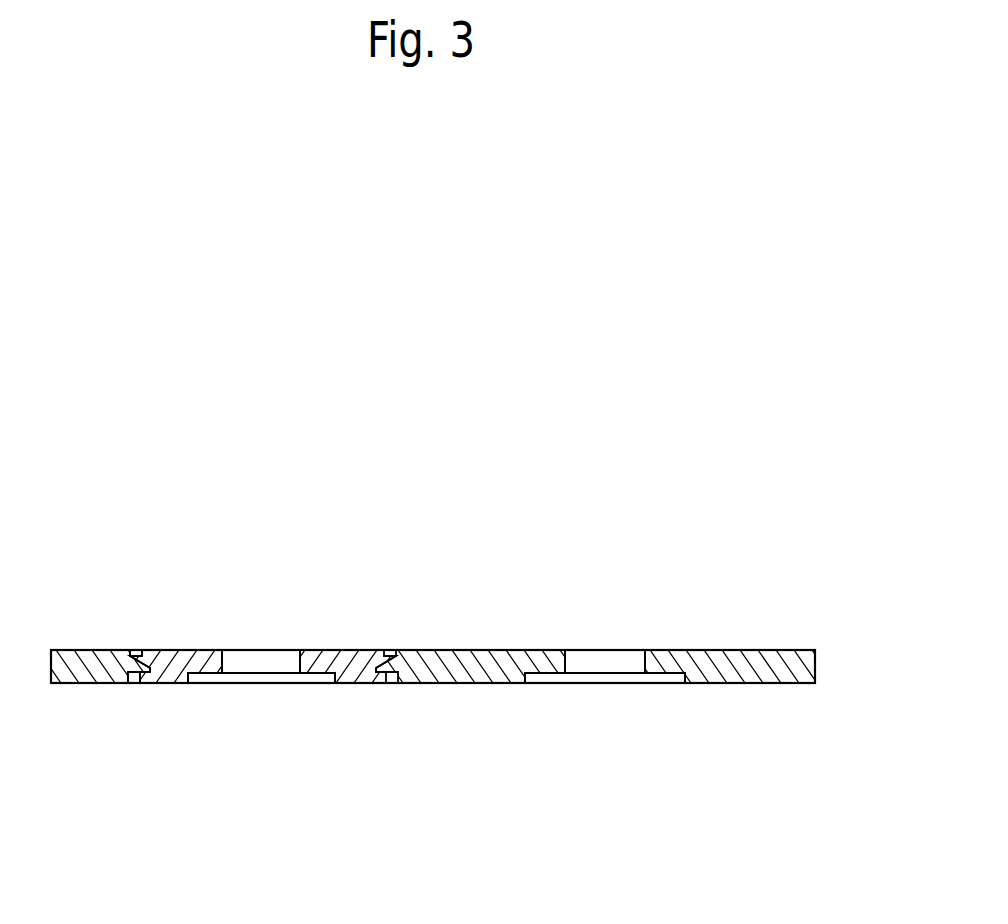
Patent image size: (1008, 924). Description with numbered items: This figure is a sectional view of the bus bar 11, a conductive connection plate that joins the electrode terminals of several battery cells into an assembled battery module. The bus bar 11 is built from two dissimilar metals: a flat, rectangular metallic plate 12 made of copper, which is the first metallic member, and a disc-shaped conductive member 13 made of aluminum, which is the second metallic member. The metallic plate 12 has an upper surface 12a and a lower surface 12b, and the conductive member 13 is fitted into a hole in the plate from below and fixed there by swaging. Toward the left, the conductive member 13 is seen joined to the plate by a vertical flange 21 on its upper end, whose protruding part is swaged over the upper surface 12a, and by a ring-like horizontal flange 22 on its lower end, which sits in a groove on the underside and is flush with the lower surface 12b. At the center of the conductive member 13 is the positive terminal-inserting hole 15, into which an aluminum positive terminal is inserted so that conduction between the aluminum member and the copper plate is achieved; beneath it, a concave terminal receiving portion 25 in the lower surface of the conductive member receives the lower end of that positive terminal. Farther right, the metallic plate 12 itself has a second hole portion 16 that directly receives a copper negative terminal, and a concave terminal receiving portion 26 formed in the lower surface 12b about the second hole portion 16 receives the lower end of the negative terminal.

The bus bar 11 is at (780, 559).
The metallic plate 12 is at (834, 684).
The upper surface 12a is at (87, 650).
The lower surface 12b is at (87, 683).
The conductive member 13 is at (354, 635).
The positive terminal-inserting hole 15 is at (241, 644).
The second hole portion 16 is at (582, 644).
The vertical flange 21 is at (141, 650).
The horizontal flange 22 is at (134, 683).
The terminal receiving portion 25 is at (313, 683).
The terminal receiving portion 26 is at (661, 683).